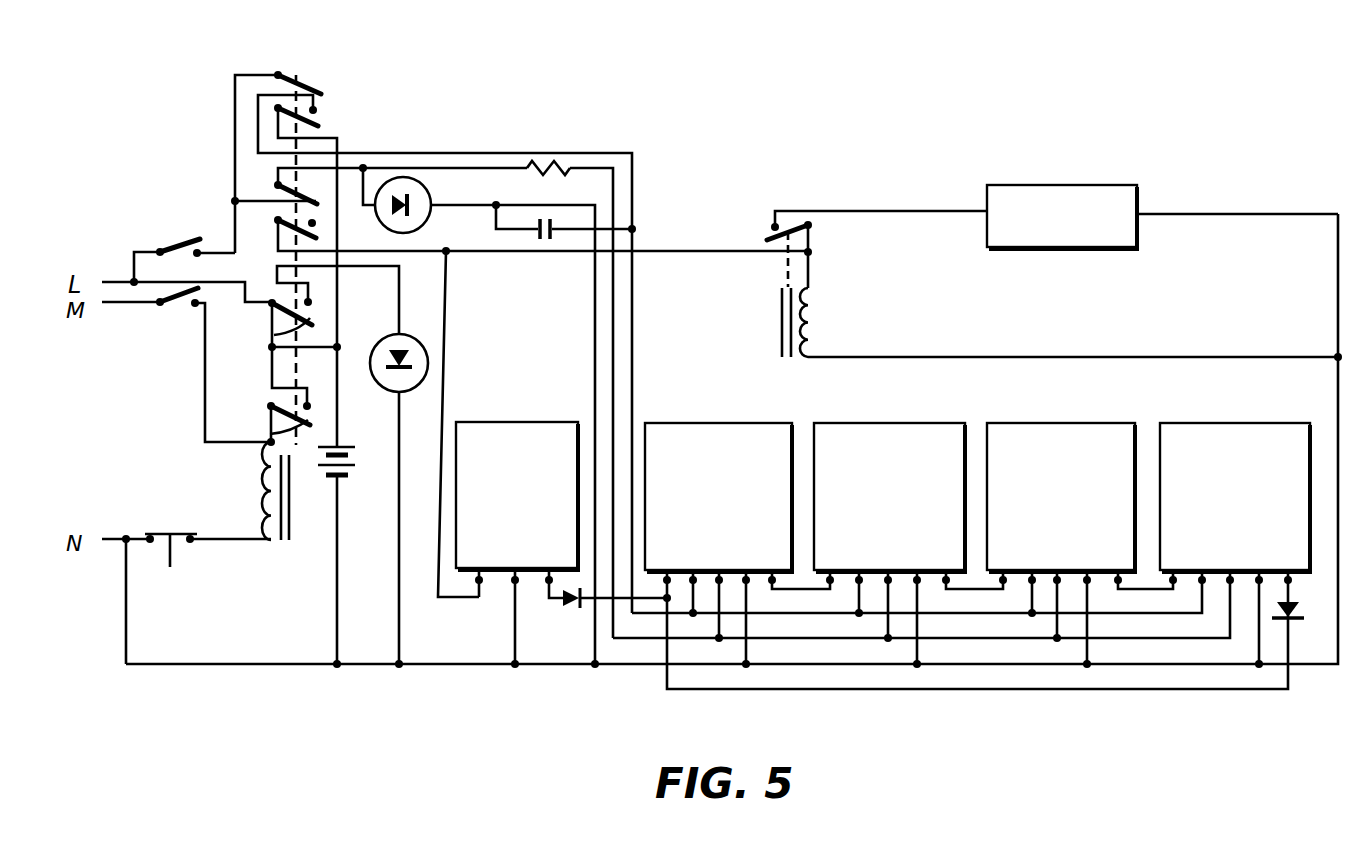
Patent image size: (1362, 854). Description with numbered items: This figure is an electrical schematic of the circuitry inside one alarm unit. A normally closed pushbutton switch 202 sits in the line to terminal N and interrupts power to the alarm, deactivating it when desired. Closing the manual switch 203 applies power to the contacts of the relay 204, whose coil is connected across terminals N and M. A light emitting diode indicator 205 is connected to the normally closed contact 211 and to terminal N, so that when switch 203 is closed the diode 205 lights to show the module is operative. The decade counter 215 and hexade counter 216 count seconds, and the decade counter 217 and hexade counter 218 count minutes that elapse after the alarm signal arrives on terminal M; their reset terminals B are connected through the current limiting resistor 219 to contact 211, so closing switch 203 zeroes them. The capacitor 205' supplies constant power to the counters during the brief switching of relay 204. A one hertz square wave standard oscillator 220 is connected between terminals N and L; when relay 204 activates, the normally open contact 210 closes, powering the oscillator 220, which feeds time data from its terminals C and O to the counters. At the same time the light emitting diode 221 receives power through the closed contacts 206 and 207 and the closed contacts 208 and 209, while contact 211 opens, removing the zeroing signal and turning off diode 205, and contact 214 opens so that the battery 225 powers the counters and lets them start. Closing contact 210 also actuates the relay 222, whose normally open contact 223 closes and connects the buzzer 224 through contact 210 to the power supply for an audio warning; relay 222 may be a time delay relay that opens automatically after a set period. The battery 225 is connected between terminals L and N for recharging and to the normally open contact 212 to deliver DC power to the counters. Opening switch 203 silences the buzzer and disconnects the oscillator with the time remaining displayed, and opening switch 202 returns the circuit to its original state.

The pushbutton switch 202 is at (177, 530).
The manual switch 203 is at (178, 268).
The relay 204 is at (266, 487).
The light emitting diode indicator 205 is at (481, 418).
The capacitor 205' is at (542, 226).
The closed contact 206 is at (272, 426).
The closed contact 207 is at (290, 402).
The closed contact 208 is at (270, 339).
The closed contact 209 is at (286, 323).
The normally open contact 210 is at (318, 236).
The normally closed contact 211 is at (316, 200).
The normally open contact 212 is at (320, 122).
The contact 214 is at (318, 90).
The decade counter 215 is at (710, 422).
The hexade counter 216 is at (878, 422).
The decade counter 217 is at (1048, 422).
The hexade counter 218 is at (1235, 422).
The current limiting resistor 219 is at (540, 176).
The standard oscillator 220 is at (503, 422).
The light emitting diode 221 is at (393, 392).
The relay 222 is at (782, 324).
The normally open contact 223 is at (772, 228).
The buzzer 224 is at (1057, 185).
The battery 225 is at (340, 480).